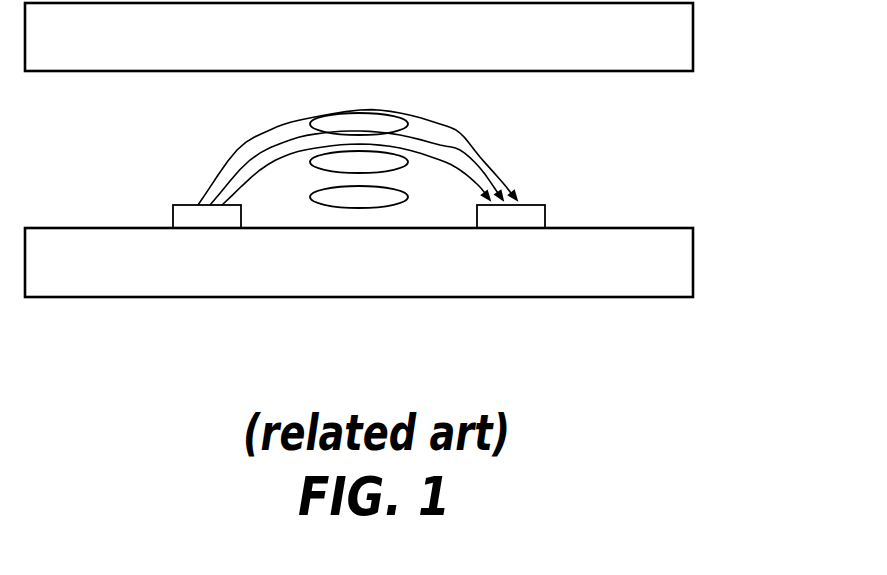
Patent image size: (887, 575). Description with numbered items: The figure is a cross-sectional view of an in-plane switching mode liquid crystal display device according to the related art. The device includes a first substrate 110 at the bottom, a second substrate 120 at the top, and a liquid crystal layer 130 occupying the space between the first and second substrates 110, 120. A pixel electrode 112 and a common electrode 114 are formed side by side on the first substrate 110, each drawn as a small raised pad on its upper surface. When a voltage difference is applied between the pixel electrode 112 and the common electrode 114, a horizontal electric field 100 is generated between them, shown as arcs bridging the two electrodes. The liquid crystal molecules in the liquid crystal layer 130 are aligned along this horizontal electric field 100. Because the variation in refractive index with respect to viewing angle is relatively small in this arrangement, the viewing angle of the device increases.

The horizontal electric field 100 is at (477, 142).
The first substrate 110 is at (677, 277).
The pixel electrode 112 is at (203, 220).
The common electrode 114 is at (516, 218).
The second substrate 120 is at (677, 52).
The liquid crystal layer 130 is at (703, 72).